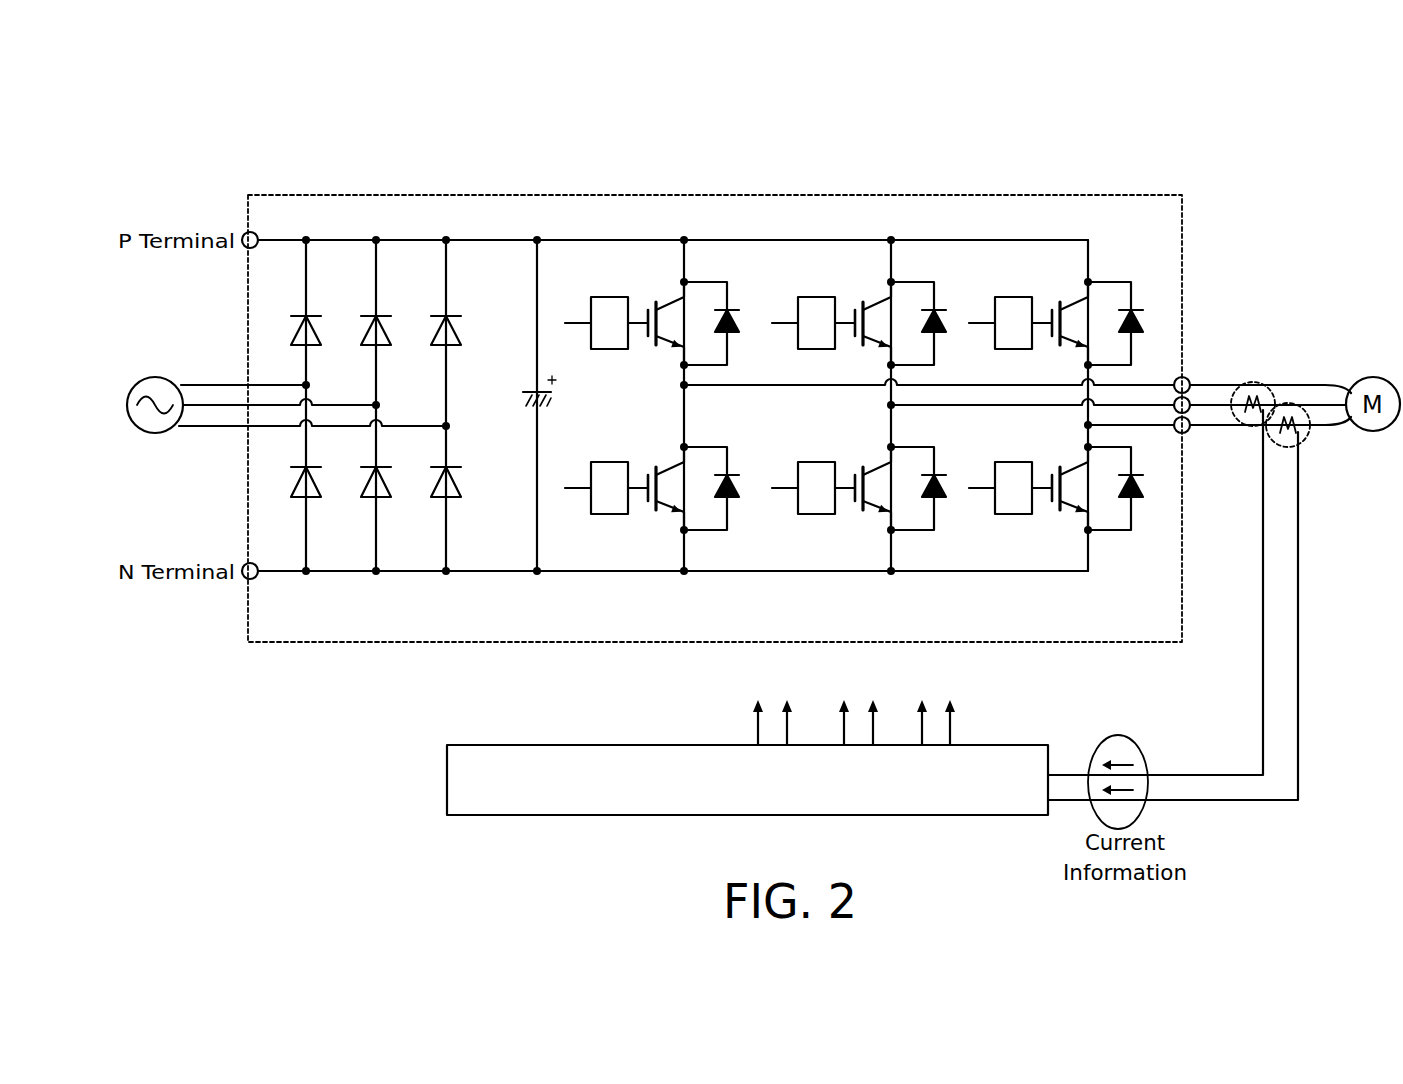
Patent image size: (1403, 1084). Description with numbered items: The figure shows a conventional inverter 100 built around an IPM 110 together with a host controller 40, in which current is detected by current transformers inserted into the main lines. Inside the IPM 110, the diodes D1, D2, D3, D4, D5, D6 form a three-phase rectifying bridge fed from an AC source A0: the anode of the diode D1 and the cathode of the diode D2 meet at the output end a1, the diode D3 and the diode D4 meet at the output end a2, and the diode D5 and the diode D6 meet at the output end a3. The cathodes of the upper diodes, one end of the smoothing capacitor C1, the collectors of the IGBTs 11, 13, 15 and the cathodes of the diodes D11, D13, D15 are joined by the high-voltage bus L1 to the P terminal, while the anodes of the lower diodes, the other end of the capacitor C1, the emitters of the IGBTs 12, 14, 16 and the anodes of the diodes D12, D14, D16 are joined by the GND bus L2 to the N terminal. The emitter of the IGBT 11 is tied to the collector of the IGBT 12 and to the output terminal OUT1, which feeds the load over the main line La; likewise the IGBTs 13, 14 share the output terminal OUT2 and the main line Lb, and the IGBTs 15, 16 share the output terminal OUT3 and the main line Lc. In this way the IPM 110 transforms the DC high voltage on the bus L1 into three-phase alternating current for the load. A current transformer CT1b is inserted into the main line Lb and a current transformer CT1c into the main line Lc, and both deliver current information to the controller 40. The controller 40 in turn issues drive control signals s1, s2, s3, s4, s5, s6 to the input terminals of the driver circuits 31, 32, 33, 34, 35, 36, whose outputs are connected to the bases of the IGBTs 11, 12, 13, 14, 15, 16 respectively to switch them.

The inverter 100 is at (952, 144).
The IPM 110 is at (665, 195).
The IGBT 11 is at (665, 321).
The IGBT 12 is at (665, 486).
The IGBT 13 is at (872, 321).
The IGBT 14 is at (872, 486).
The IGBT 15 is at (1069, 321).
The IGBT 16 is at (1069, 486).
The driver circuit 31 is at (606, 300).
The driver circuit 32 is at (606, 465).
The driver circuit 33 is at (813, 300).
The driver circuit 34 is at (813, 465).
The driver circuit 35 is at (1010, 300).
The driver circuit 36 is at (1010, 465).
The host controller 40 is at (535, 745).
The diode D1 is at (318, 314).
The diode D2 is at (318, 466).
The diode D3 is at (388, 315).
The diode D4 is at (388, 466).
The diode D5 is at (458, 315).
The diode D6 is at (458, 466).
The diode D11 is at (732, 323).
The diode D12 is at (732, 488).
The diode D13 is at (939, 323).
The diode D14 is at (939, 488).
The diode D15 is at (1119, 306).
The diode D16 is at (1120, 506).
The smoothing capacitor C1 is at (526, 386).
The AC source A0 is at (162, 378).
The output end a1 is at (196, 385).
The output end a2 is at (205, 411).
The output end a3 is at (240, 431).
The high-voltage bus L1 is at (930, 240).
The GND bus L2 is at (1022, 572).
The output terminal OUT1 is at (1186, 378).
The output terminal OUT2 is at (1189, 398).
The output terminal OUT3 is at (1189, 432).
The main line La is at (1300, 383).
The main line Lb is at (1320, 404).
The main line Lc is at (1335, 428).
The current transformer CT1b is at (1273, 398).
The current transformer CT1c is at (1304, 441).
The drive control signal s1 is at (568, 310).
The drive control signal s2 is at (568, 475).
The drive control signal s3 is at (775, 310).
The drive control signal s4 is at (775, 475).
The drive control signal s5 is at (972, 310).
The drive control signal s6 is at (972, 475).